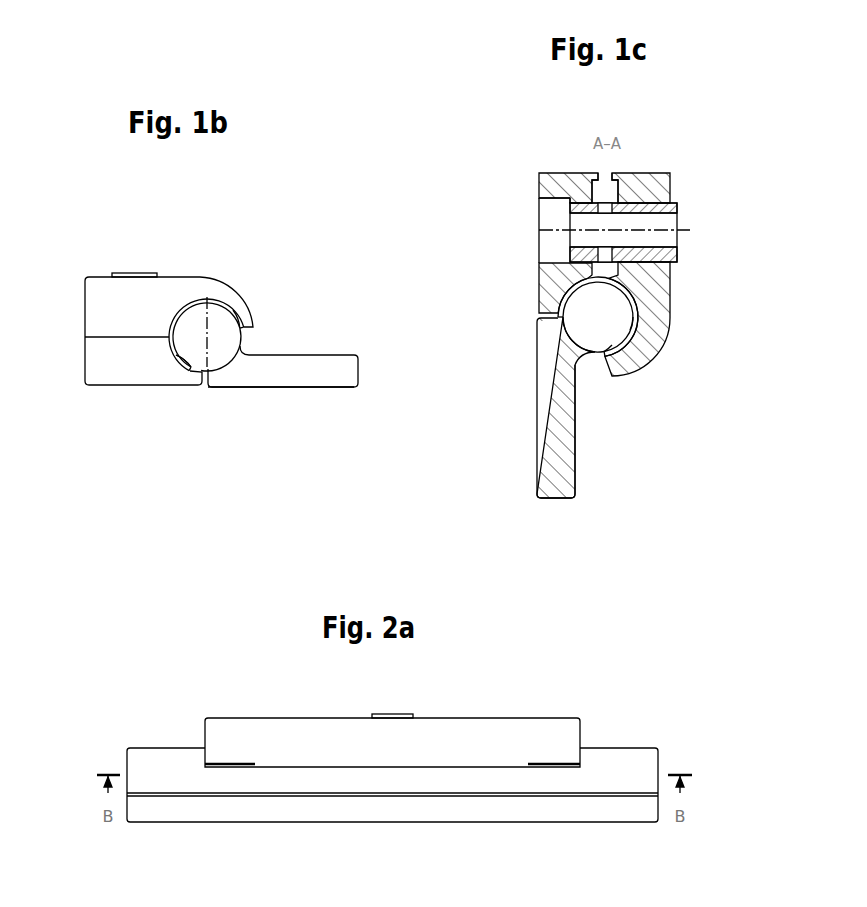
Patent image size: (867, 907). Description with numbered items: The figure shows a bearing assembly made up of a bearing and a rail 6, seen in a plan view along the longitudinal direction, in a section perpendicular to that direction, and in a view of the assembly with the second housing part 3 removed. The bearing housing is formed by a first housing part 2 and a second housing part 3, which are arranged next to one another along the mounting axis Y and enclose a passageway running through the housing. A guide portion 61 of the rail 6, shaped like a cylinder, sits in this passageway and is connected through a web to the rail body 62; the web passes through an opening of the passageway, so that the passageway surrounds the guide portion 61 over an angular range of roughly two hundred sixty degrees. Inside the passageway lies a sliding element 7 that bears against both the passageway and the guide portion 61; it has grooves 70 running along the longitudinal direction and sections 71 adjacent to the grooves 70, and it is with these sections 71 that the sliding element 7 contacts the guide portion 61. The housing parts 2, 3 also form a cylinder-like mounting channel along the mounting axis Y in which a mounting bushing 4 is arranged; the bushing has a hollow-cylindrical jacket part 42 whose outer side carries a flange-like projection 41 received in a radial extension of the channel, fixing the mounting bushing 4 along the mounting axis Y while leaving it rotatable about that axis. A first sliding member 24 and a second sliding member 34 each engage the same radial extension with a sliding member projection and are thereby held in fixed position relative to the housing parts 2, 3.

In FIG. 1b, the first housing part 2 is at (101, 289).
In FIG. 1c, the first housing part 2 is at (643, 181).
In FIG. 2a, the first housing part 2 is at (545, 732).
In FIG. 1b, the second housing part 3 is at (98, 370).
In FIG. 1c, the second housing part 3 is at (557, 174).
In FIG. 1c, the mounting bushing 4 is at (684, 251).
In FIG. 1b, the rail 6 is at (258, 398).
In FIG. 1c, the rail 6 is at (572, 490).
In FIG. 1b, the sliding element 7 is at (180, 368).
In FIG. 1c, the sliding element 7 is at (560, 286).
In FIG. 1c, the first sliding member 24 is at (660, 199).
In FIG. 1c, the second sliding member 34 is at (660, 199).
In FIG. 1c, the projection 41 is at (599, 178).
In FIG. 1c, the jacket part 42 is at (660, 209).
In FIG. 1b, the guide portion 61 is at (221, 335).
In FIG. 1c, the guide portion 61 is at (631, 347).
In FIG. 2a, the guide portion 61 is at (153, 767).
In FIG. 1b, the rail body 62 is at (317, 373).
In FIG. 2a, the rail body 62 is at (155, 805).
In FIG. 1b, the grooves 70 is at (223, 308).
In FIG. 1c, the grooves 70 is at (640, 338).
In FIG. 1b, the sections 71 is at (207, 309).
In FIG. 1c, the sections 71 is at (634, 318).
In FIG. 1c, the mounting axis Y is at (657, 232).